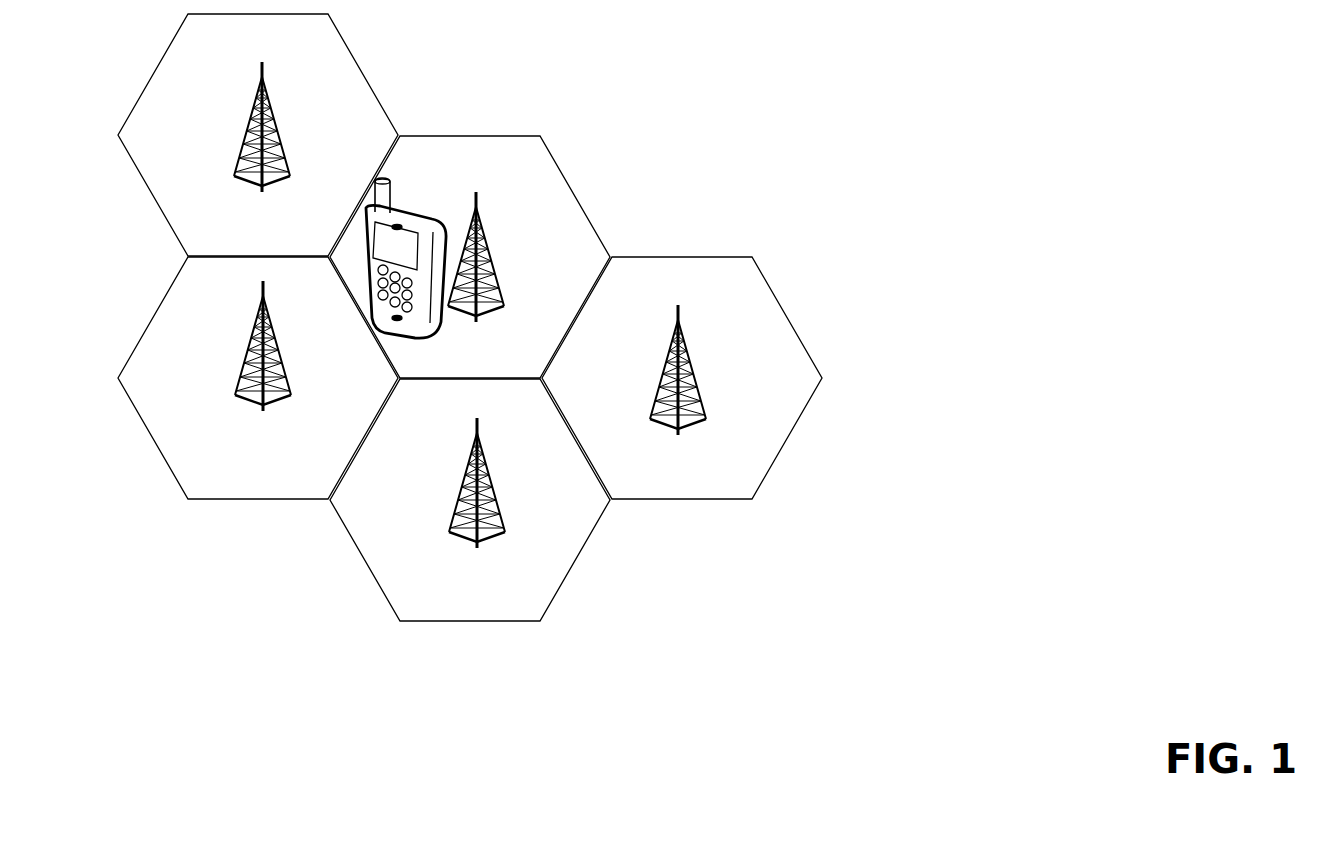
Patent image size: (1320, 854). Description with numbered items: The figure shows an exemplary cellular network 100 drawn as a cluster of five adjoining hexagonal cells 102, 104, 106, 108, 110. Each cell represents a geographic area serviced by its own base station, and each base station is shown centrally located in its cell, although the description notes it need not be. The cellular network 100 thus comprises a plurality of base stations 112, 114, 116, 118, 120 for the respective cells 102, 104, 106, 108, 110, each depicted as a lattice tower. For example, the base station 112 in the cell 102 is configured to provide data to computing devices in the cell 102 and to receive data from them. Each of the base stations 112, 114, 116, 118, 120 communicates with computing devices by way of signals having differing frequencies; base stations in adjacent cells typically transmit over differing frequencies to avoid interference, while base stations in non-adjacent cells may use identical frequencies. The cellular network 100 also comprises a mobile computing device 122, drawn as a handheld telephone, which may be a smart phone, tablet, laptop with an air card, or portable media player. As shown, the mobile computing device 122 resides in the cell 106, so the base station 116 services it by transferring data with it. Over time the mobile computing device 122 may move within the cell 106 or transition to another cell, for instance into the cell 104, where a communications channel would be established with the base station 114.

The cellular network 100 is at (1058, 117).
The cell 102 is at (240, 218).
The cell 104 is at (240, 477).
The cell 106 is at (451, 364).
The cell 108 is at (451, 607).
The cell 110 is at (663, 476).
The base station 112 is at (272, 113).
The base station 114 is at (260, 312).
The base station 116 is at (483, 240).
The base station 118 is at (483, 470).
The base station 120 is at (692, 363).
The mobile computing device 122 is at (400, 202).